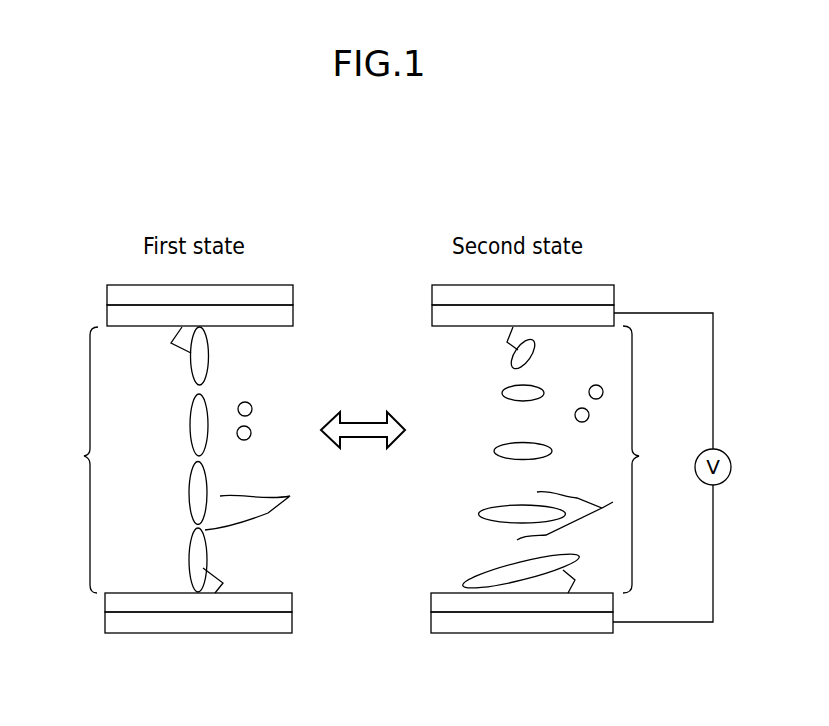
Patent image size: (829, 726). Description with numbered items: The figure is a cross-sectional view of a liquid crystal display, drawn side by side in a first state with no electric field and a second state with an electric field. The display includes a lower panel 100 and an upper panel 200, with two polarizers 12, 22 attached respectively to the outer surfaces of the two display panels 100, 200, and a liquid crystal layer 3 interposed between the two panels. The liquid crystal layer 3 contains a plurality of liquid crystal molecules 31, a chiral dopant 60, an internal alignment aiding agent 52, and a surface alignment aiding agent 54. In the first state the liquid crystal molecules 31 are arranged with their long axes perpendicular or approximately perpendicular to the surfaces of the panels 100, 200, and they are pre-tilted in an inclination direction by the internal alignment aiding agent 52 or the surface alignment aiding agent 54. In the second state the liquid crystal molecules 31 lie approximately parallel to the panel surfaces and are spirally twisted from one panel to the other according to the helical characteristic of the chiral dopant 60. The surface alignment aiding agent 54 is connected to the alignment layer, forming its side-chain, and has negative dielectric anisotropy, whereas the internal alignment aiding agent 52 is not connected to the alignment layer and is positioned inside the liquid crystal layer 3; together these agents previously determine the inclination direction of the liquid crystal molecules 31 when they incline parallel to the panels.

The polarizer 22 is at (120, 294).
The upper panel 200 is at (120, 315).
The lower panel 100 is at (118, 602).
The polarizer 12 is at (118, 622).
The liquid crystal layer 3 is at (362, 459).
The liquid crystal molecules 31 is at (208, 348).
The surface alignment aiding agent 54 is at (175, 347).
The chiral dopant 60 is at (244, 403).
The internal alignment aiding agent 52 is at (268, 513).